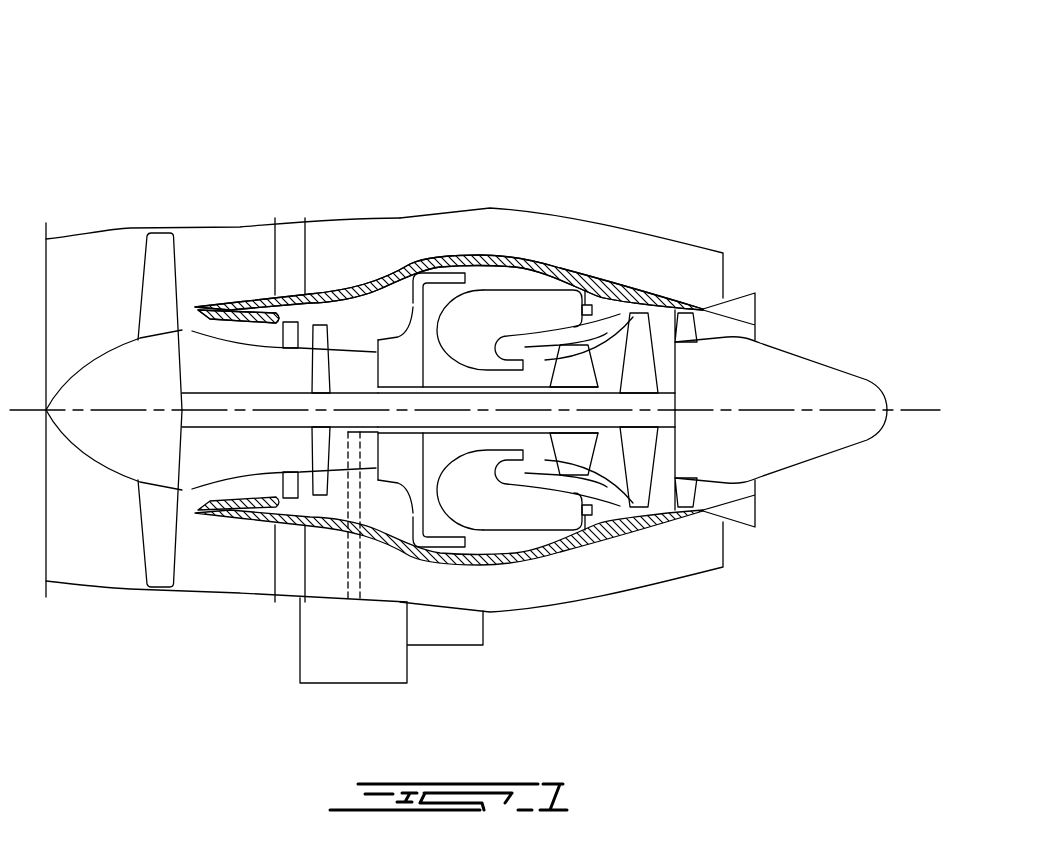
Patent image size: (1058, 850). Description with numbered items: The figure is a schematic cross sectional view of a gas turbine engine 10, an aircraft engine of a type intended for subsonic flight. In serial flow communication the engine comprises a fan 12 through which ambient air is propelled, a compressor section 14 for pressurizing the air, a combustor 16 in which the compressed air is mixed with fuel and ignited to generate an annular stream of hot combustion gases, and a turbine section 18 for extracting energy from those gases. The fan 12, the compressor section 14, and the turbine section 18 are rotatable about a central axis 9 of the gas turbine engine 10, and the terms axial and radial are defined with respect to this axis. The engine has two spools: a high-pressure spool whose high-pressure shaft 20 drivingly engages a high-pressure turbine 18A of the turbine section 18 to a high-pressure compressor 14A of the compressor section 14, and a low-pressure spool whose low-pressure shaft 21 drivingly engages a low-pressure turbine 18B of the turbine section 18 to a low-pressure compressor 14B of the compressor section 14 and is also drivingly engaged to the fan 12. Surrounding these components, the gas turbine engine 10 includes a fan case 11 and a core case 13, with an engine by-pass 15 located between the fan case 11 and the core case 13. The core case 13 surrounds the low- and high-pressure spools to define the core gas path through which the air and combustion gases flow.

The central axis 9 is at (915, 410).
The gas turbine engine 10 is at (650, 121).
The fan case 11 is at (87, 237).
The fan 12 is at (157, 526).
The core case 13 is at (648, 303).
The compressor section 14 is at (347, 333).
The high-pressure compressor 14A is at (327, 517).
The low-pressure compressor 14B is at (320, 453).
The engine by-pass 15 is at (558, 234).
The combustor 16 is at (510, 307).
The turbine section 18 is at (610, 460).
The high-pressure turbine 18A is at (580, 367).
The low-pressure turbine 18B is at (640, 343).
The high-pressure shaft 20 is at (447, 433).
The low-pressure shaft 21 is at (222, 390).